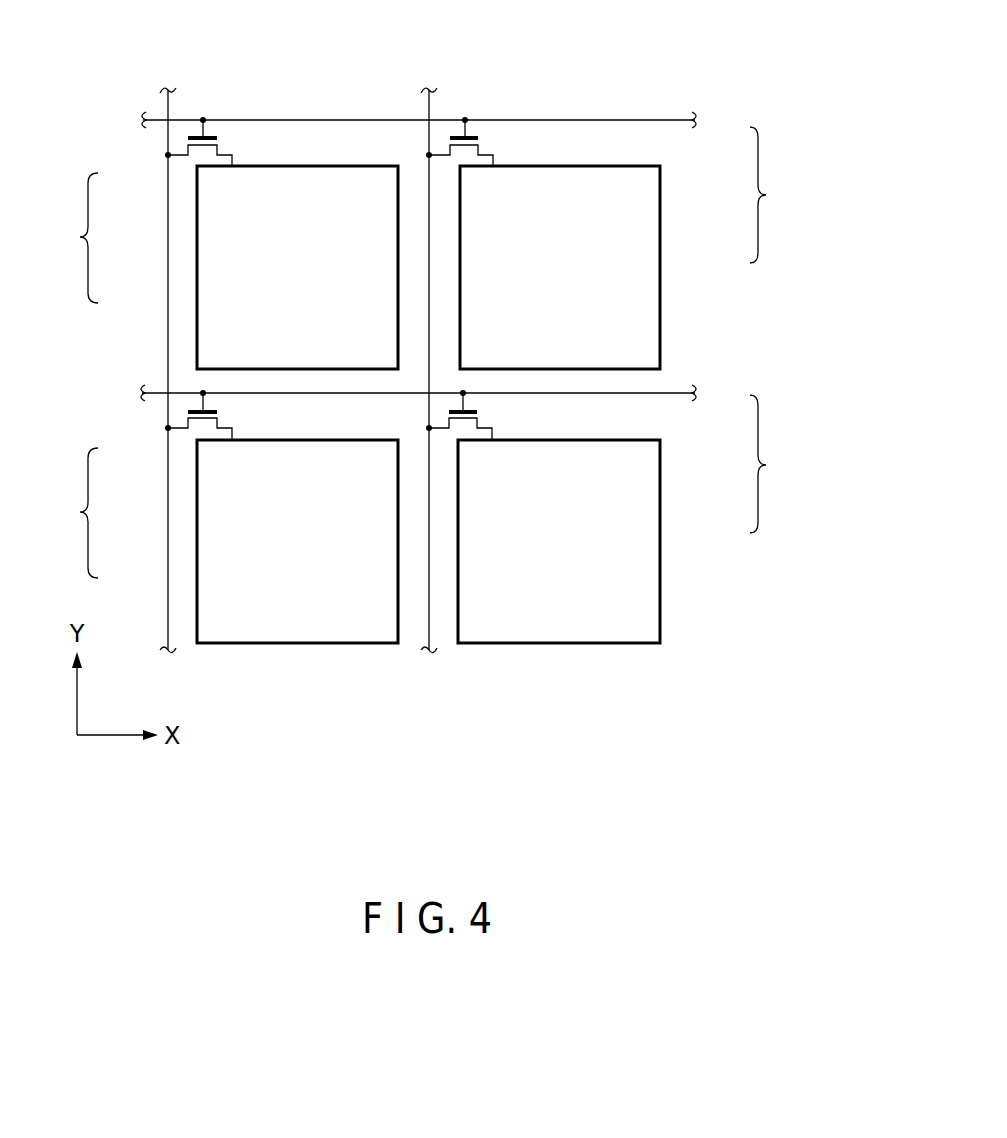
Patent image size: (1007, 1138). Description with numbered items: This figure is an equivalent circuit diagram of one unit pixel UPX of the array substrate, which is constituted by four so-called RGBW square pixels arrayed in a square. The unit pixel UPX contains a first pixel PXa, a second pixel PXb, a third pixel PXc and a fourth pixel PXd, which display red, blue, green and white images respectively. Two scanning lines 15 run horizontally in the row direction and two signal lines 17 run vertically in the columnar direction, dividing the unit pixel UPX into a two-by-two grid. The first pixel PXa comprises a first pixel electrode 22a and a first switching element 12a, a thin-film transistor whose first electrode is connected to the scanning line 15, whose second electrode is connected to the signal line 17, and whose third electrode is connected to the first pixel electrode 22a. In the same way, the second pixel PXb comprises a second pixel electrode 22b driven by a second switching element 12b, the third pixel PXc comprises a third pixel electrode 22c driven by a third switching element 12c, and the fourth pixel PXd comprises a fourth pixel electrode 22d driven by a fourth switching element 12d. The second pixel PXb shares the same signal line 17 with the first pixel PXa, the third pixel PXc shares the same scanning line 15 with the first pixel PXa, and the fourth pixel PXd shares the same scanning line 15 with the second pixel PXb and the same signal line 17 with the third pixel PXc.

The scanning line 15 is at (141, 118).
The signal line 17 is at (170, 100).
The first switching element 12a is at (178, 176).
The second switching element 12b is at (178, 449).
The third switching element 12c is at (514, 146).
The fourth switching element 12d is at (512, 415).
The first pixel electrode 22a is at (197, 286).
The second pixel electrode 22b is at (197, 559).
The third pixel electrode 22c is at (660, 250).
The fourth pixel electrode 22d is at (660, 518).
The first pixel PXa is at (62, 238).
The second pixel PXb is at (62, 513).
The third pixel PXc is at (786, 195).
The fourth pixel PXd is at (787, 464).
The unit pixel UPX is at (686, 103).